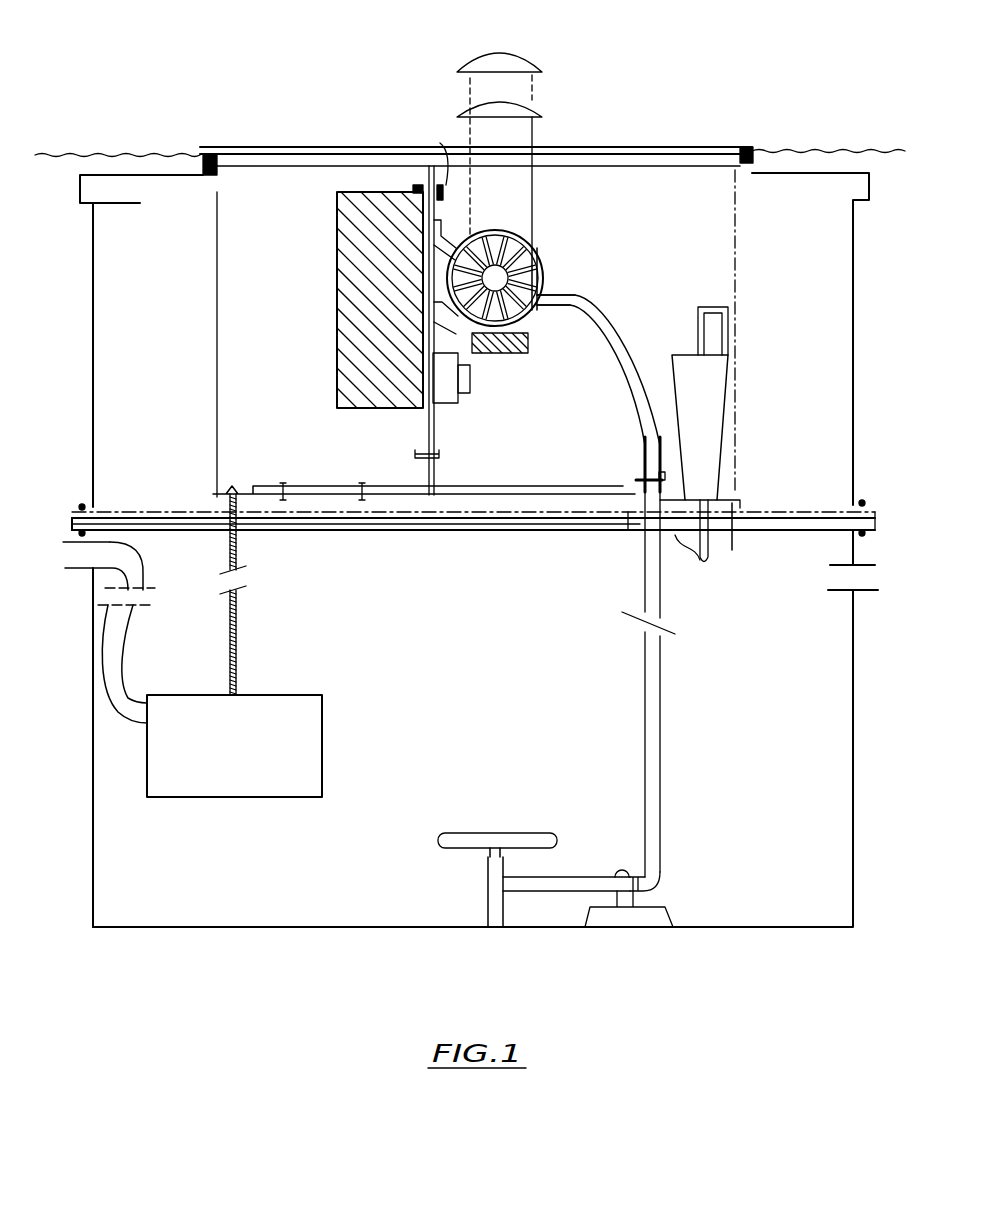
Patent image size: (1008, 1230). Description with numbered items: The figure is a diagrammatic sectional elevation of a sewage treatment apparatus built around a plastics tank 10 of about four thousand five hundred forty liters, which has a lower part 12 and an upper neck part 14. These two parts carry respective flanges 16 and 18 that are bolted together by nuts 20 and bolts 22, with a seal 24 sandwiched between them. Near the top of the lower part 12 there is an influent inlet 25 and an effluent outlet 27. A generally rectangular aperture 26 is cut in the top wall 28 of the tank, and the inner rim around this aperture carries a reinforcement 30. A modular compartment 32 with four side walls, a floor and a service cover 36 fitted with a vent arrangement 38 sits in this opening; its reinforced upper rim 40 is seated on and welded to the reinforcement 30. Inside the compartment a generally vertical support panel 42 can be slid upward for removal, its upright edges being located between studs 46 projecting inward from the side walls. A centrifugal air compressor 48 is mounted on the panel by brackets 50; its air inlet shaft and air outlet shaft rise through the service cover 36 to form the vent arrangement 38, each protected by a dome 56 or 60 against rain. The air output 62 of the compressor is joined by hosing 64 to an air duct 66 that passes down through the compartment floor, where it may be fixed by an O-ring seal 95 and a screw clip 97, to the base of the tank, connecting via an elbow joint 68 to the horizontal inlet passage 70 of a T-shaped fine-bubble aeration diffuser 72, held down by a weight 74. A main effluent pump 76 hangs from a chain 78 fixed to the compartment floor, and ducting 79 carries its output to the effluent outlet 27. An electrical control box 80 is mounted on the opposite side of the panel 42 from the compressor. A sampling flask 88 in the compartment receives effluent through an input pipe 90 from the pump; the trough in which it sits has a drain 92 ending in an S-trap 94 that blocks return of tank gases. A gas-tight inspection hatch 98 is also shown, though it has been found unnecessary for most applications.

The tank 10 is at (93, 738).
The lower part 12 is at (93, 626).
The upper neck part 14 is at (92, 353).
The flange 16 is at (73, 526).
The flange 18 is at (75, 520).
The nuts 20 is at (112, 542).
The bolts 22 is at (81, 504).
The seal 24 is at (876, 513).
The influent inlet 25 is at (868, 593).
The aperture 26 is at (212, 196).
The effluent outlet 27 is at (68, 568).
The top wall 28 is at (136, 180).
The reinforcement 30 is at (760, 148).
The modular compartment 32 is at (218, 372).
The service cover 36 is at (657, 146).
The vent arrangement 38 is at (520, 85).
The reinforced upper rim 40 is at (198, 157).
The support panel 42 is at (437, 425).
The studs 46 is at (407, 187).
The centrifugal air compressor 48 is at (531, 248).
The brackets 50 is at (446, 228).
The dome 56 is at (540, 104).
The dome 60 is at (487, 57).
The air output 62 is at (563, 308).
The hosing 64 is at (612, 314).
The air duct 66 is at (647, 437).
The elbow joint 68 is at (661, 876).
The inlet passage 70 is at (556, 893).
The fine-bubble aeration diffuser 72 is at (462, 846).
The weight 74 is at (650, 912).
The main effluent pump 76 is at (322, 756).
The chain 78 is at (238, 545).
The ducting 79 is at (118, 655).
The electrical control box 80 is at (337, 298).
The sampling flask 88 is at (677, 375).
The input pipe 90 is at (736, 500).
The drain 92 is at (738, 540).
The S-trap 94 is at (705, 561).
The O-ring seal 95 is at (625, 535).
The screw clip 97 is at (640, 478).
The gas-tight inspection hatch 98 is at (316, 482).